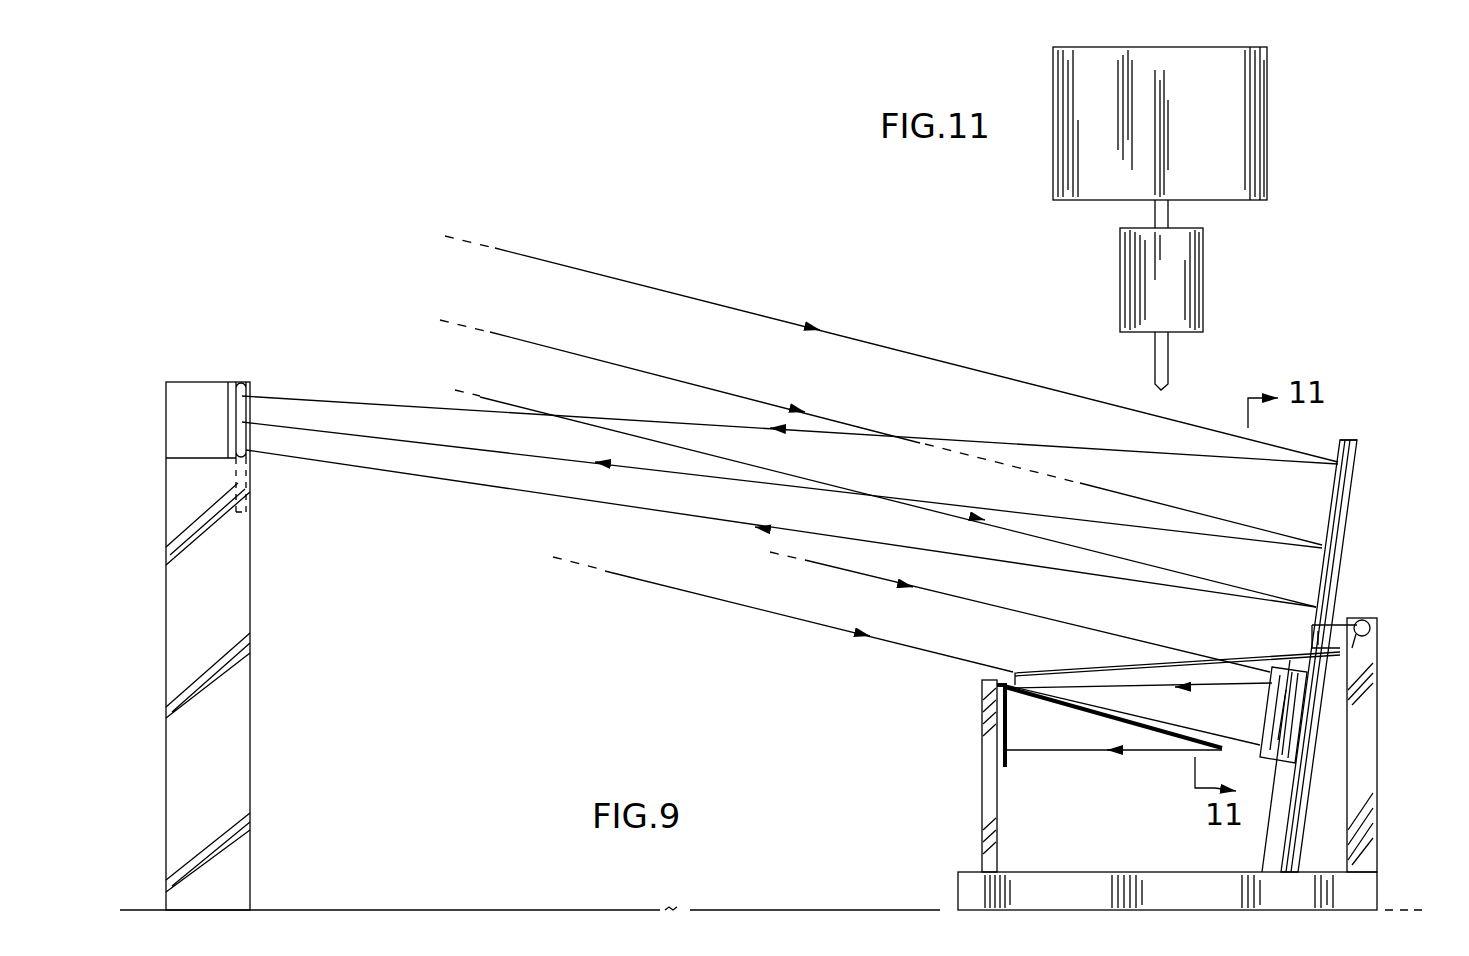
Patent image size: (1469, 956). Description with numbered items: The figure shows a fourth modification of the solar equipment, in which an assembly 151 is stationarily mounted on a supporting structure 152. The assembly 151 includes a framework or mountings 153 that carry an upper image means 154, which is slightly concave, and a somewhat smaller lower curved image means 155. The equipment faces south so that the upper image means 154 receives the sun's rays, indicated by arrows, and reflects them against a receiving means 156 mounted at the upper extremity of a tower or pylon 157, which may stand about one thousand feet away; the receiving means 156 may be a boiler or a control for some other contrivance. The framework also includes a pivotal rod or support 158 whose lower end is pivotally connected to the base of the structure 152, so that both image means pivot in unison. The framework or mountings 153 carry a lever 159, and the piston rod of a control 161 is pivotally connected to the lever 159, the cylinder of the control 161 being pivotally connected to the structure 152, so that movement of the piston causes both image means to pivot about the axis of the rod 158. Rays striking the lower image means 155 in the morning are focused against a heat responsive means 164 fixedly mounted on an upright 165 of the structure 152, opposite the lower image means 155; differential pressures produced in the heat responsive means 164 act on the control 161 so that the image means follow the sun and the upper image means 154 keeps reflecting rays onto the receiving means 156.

In FIG. 9, the assembly 151 is at (1364, 466).
In FIG. 9, the supporting structure 152 is at (1381, 853).
In FIG. 9, the framework or mountings 153 is at (1341, 536).
In FIG. 11, the upper image means 154 is at (1243, 121).
In FIG. 9, the upper image means 154 is at (1327, 447).
In FIG. 11, the lower curved image means 155 is at (1190, 284).
In FIG. 9, the lower curved image means 155 is at (1290, 732).
In FIG. 9, the receiving means 156 is at (243, 405).
In FIG. 9, the tower or pylon 157 is at (230, 690).
In FIG. 11, the pivotal rod or support 158 is at (1160, 210).
In FIG. 9, the pivotal rod or support 158 is at (1290, 817).
In FIG. 9, the lever 159 is at (1340, 632).
In FIG. 9, the control 161 is at (1370, 642).
In FIG. 9, the heat responsive means 164 is at (1012, 668).
In FIG. 9, the upright 165 is at (982, 822).